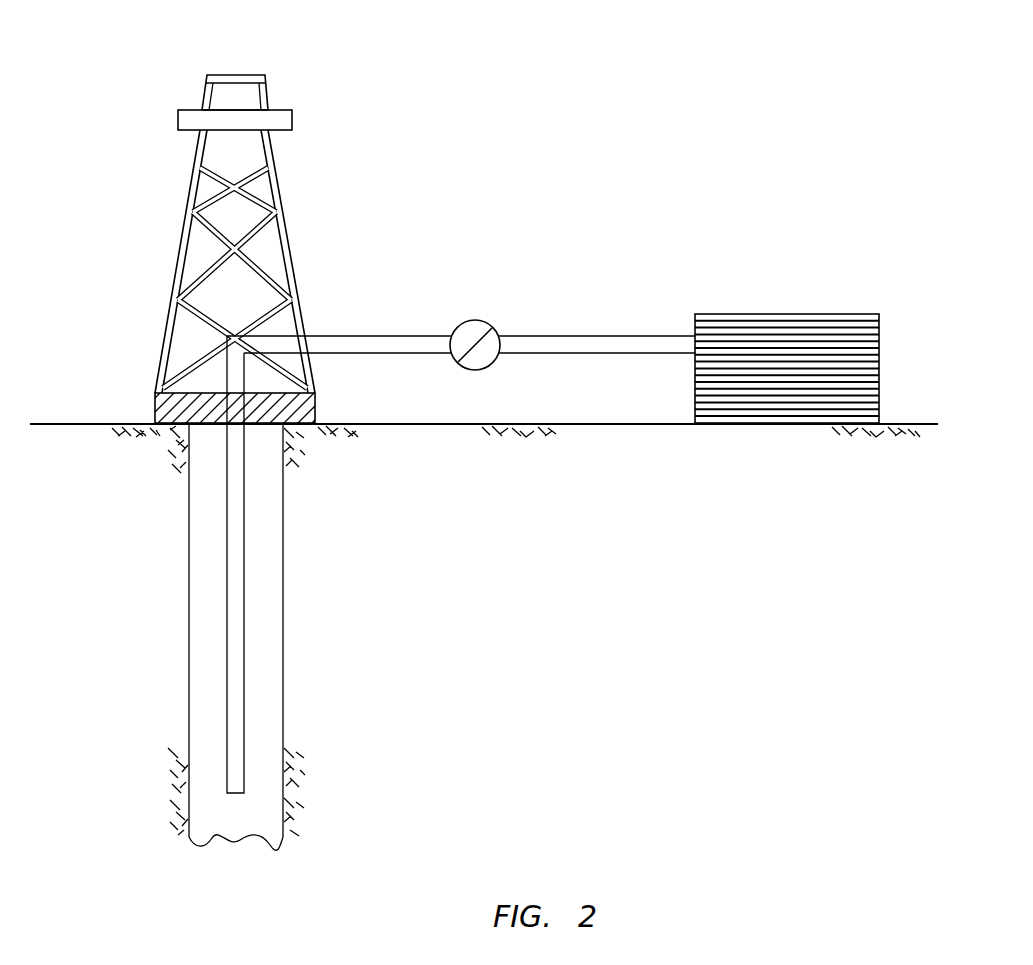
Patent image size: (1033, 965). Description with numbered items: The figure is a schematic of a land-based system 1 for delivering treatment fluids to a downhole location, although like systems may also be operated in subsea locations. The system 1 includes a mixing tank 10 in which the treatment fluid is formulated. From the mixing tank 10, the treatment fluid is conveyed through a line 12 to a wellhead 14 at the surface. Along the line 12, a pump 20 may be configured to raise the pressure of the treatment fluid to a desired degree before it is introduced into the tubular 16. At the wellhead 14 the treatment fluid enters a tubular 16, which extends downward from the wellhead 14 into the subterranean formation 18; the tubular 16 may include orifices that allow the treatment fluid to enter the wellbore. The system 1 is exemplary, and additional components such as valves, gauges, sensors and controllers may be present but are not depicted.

The system 1 is at (108, 75).
The mixing tank 10 is at (866, 314).
The line 12 is at (380, 337).
The wellhead 14 is at (155, 408).
The tubular 16 is at (245, 549).
The subterranean formation 18 is at (105, 649).
The pump 20 is at (487, 322).